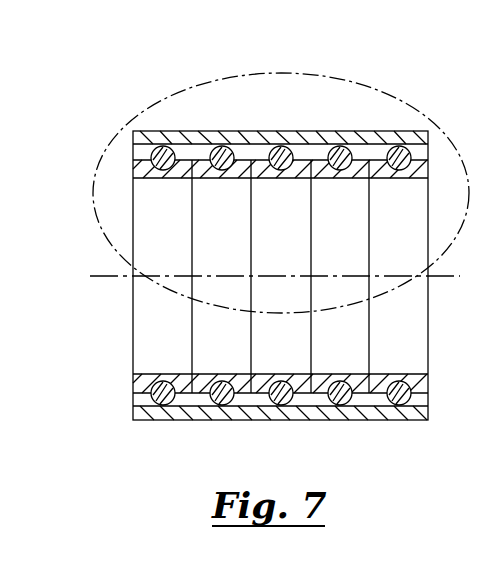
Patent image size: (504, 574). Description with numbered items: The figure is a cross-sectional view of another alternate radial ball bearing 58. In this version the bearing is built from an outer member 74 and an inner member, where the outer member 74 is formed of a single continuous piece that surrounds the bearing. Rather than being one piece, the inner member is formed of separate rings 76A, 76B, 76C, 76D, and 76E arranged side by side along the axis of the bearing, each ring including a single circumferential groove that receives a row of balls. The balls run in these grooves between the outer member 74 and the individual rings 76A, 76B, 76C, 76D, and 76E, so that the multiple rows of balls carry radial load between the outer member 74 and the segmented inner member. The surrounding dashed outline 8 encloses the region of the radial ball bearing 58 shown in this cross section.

The bearing assembly 8 is at (368, 83).
The radial ball bearing 58 is at (216, 119).
The outer member 74 is at (310, 131).
The separate ring 76A is at (142, 383).
The separate ring 76B is at (200, 392).
The separate ring 76C is at (303, 385).
The separate ring 76D is at (363, 385).
The separate ring 76E is at (423, 383).